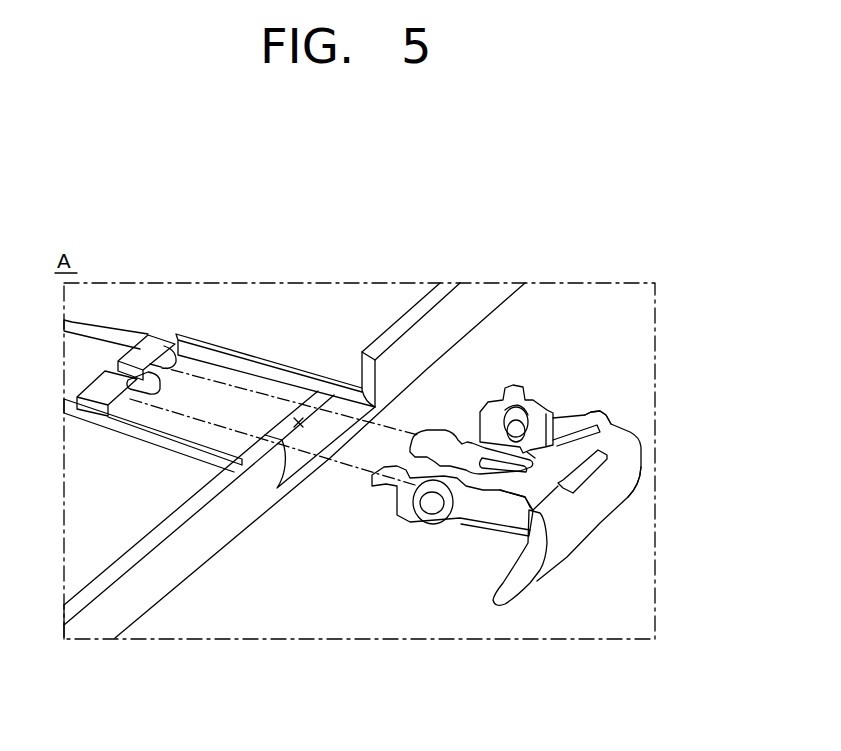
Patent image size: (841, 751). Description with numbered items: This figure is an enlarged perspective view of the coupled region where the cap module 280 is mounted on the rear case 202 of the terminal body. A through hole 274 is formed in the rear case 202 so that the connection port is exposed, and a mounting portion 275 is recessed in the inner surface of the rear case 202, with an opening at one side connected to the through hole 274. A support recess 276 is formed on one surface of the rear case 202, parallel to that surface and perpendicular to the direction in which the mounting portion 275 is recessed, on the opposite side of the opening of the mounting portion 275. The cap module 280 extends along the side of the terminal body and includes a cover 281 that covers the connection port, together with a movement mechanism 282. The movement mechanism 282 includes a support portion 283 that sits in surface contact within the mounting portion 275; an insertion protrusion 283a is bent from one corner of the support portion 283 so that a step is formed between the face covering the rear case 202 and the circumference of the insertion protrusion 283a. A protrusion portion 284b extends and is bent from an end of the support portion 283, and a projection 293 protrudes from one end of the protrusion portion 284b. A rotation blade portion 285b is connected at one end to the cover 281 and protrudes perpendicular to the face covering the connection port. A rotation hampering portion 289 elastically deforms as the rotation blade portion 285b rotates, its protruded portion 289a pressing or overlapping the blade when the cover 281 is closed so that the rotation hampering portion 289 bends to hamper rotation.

The rear case 202 is at (467, 308).
The through hole 274 is at (298, 418).
The mounting portion 275 is at (203, 397).
The support recess 276 is at (170, 350).
The cap module 280 is at (617, 523).
The cover 281 is at (623, 475).
The movement mechanism 282 is at (556, 399).
The support portion 283 is at (467, 440).
The insertion protrusion 283a is at (383, 484).
The protrusion portion 284b is at (403, 512).
The rotation blade portion 285b is at (461, 512).
The rotation hampering portion 289 is at (593, 453).
The protruded portion 289a is at (580, 419).
The projection 293 is at (520, 388).